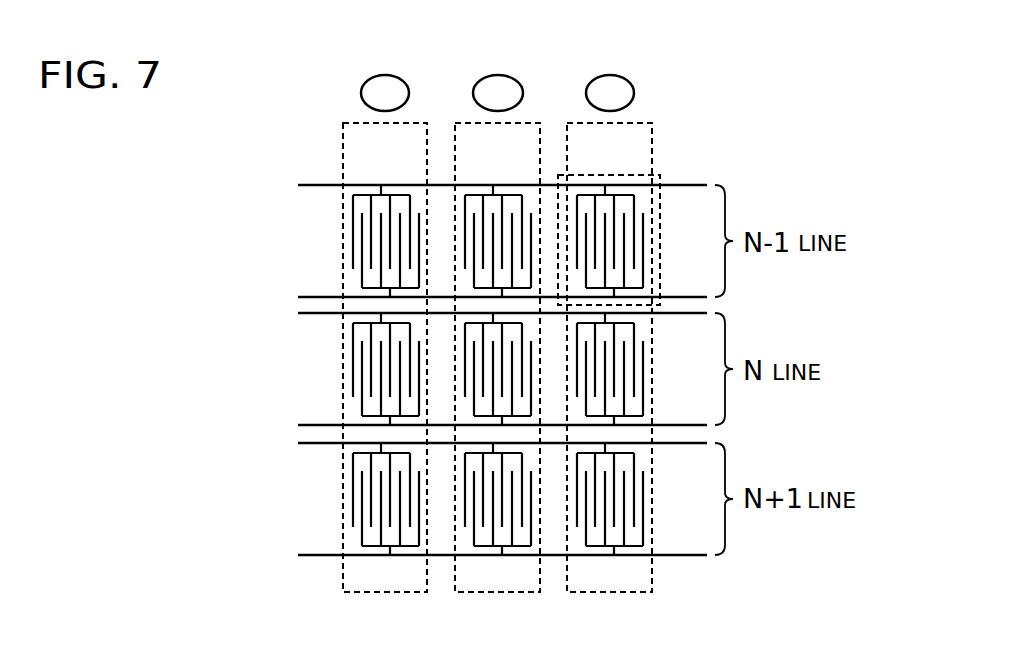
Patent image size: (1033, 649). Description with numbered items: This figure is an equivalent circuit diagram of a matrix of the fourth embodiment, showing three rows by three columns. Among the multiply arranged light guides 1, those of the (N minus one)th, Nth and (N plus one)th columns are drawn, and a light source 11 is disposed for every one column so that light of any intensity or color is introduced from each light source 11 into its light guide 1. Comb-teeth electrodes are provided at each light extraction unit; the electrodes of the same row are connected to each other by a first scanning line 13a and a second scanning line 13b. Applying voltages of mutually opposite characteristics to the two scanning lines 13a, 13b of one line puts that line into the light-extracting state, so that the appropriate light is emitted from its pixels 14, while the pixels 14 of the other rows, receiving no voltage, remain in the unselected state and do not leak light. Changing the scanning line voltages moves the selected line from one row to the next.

The light guide 1 is at (497, 378).
The light source 11 is at (608, 88).
The first scanning line 13a is at (310, 443).
The second scanning line 13b is at (312, 555).
The pixel 14 is at (655, 173).